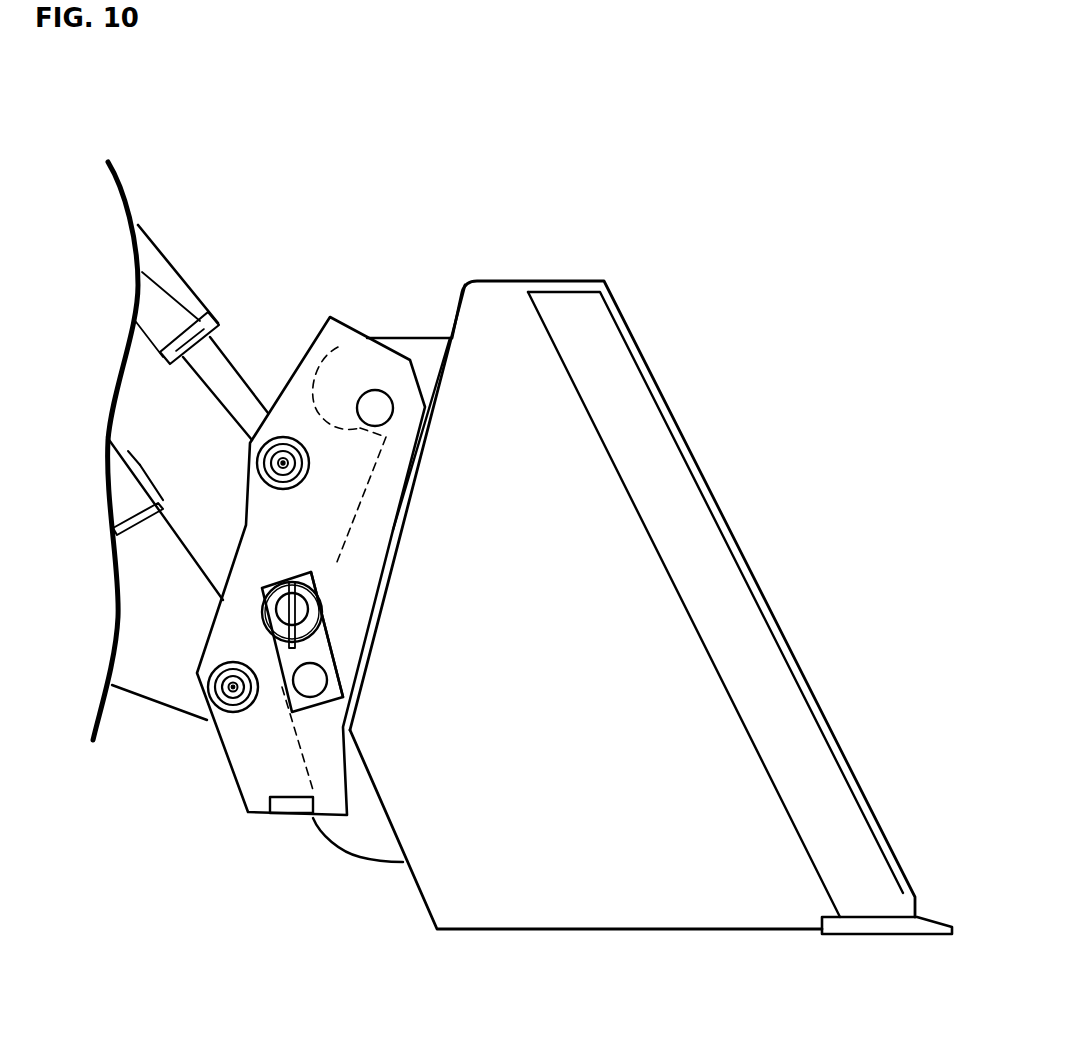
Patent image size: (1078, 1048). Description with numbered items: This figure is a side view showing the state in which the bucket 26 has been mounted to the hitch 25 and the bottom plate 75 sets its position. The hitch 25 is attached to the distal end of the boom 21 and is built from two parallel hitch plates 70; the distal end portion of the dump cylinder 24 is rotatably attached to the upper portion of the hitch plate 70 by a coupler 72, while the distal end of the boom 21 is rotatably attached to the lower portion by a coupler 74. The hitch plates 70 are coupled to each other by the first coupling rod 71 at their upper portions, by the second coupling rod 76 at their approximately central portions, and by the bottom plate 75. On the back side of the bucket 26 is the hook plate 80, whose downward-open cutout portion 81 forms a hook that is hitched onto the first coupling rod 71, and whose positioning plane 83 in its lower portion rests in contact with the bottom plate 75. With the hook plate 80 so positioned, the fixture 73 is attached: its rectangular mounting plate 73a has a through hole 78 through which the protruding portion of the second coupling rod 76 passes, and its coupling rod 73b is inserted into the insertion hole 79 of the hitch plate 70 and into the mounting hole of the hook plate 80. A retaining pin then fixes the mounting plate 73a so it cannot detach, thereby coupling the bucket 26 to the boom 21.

The boom 21 is at (143, 670).
The dump cylinder 24 is at (173, 283).
The hitch 25 is at (331, 315).
The bucket 26 is at (665, 342).
The hitch plate 70 is at (253, 487).
The first coupling rod 71 is at (372, 390).
The coupler 72 is at (285, 437).
The fixture 73 is at (318, 715).
The mounting plate 73a is at (330, 648).
The coupling rod 73b is at (324, 677).
The coupler 74 is at (233, 712).
The bottom plate 75 is at (282, 813).
The second coupling rod 76 is at (322, 590).
The through hole 78 is at (308, 610).
The insertion hole 79 is at (346, 722).
The hook plate 80 is at (328, 560).
The cutout portion 81 is at (395, 404).
The positioning plane 83 is at (315, 816).